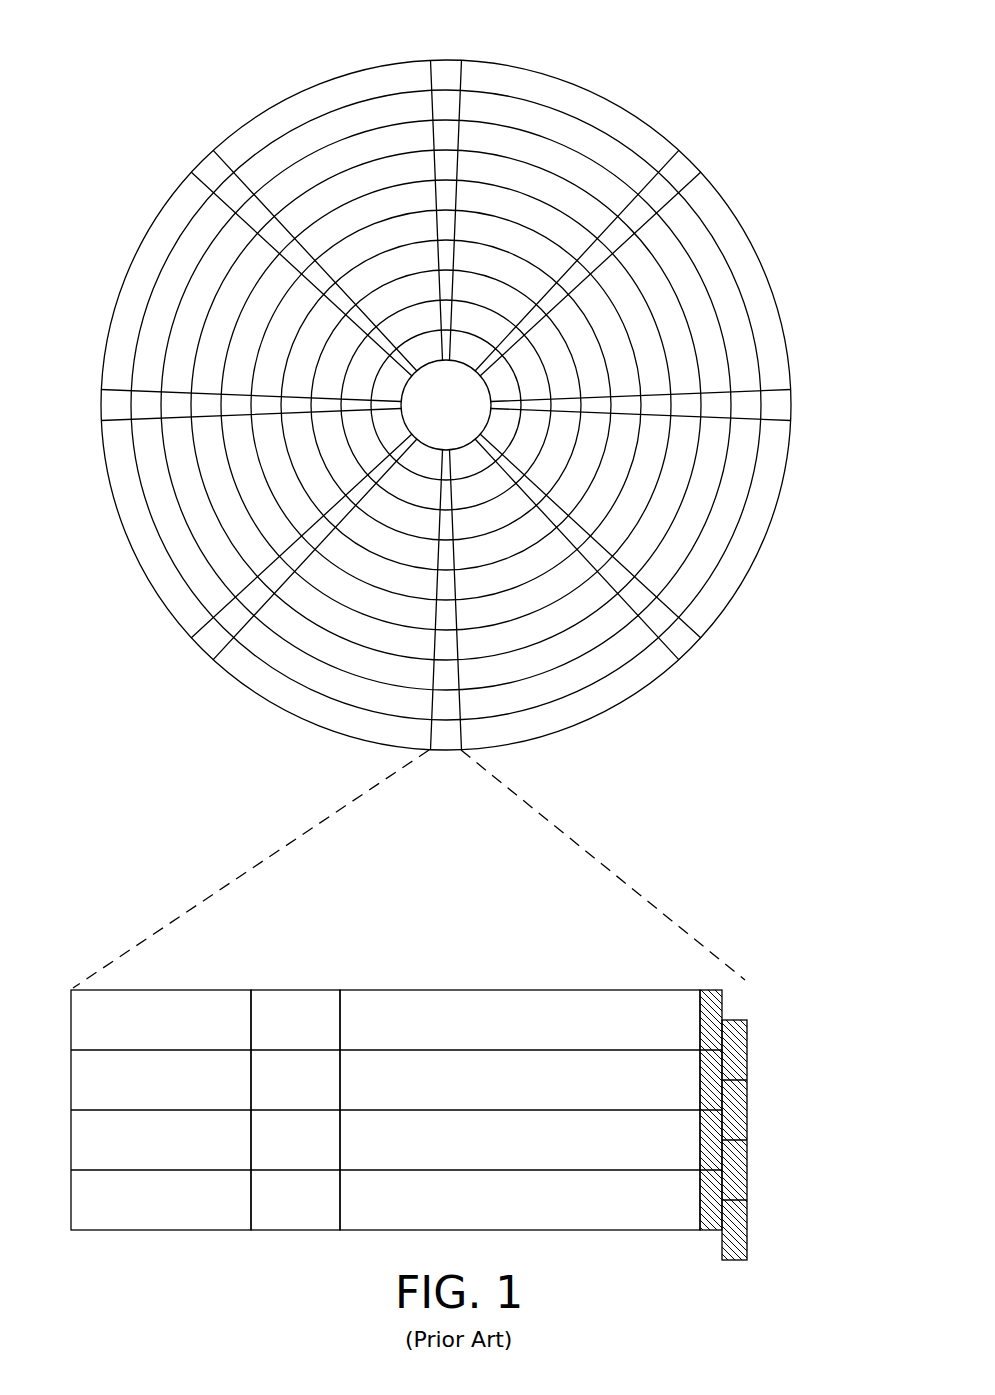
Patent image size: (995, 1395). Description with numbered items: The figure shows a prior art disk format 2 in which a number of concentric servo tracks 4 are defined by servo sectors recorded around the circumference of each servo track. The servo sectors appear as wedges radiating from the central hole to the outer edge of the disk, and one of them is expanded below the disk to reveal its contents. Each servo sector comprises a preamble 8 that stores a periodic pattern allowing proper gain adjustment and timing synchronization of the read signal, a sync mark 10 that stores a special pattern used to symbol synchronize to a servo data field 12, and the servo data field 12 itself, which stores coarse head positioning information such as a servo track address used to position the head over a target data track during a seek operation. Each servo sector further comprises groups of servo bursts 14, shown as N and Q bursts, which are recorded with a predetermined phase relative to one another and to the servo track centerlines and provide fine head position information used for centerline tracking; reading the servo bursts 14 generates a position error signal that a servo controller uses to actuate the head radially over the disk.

The disk format 2 is at (186, 59).
The servo tracks 4 is at (563, 128).
The preamble 8 is at (170, 990).
The sync mark 10 is at (298, 990).
The servo data field 12 is at (508, 990).
The servo bursts 14 is at (750, 979).